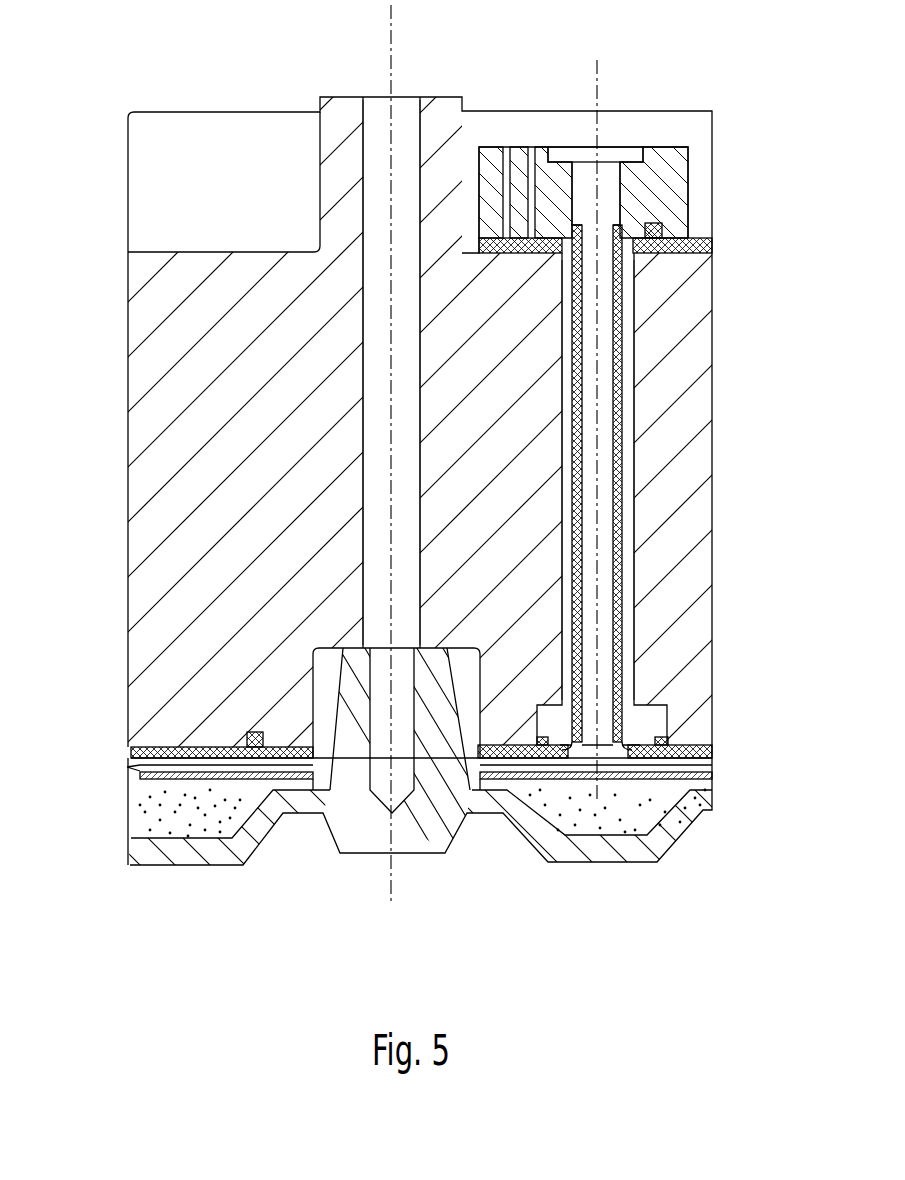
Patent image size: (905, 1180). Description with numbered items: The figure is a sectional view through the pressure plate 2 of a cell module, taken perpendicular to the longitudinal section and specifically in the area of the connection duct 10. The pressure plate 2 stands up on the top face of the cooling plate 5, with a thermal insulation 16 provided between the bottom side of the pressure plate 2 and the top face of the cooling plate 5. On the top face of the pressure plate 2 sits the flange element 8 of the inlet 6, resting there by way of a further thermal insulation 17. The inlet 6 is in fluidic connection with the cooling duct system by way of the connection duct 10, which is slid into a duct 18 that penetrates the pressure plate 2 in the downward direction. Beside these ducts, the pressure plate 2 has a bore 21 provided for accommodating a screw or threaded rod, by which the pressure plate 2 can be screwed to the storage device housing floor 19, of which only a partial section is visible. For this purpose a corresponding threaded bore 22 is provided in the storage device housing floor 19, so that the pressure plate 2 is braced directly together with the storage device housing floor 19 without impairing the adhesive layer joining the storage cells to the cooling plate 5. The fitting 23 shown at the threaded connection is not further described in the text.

The pressure plate 2 is at (153, 469).
The cooling plate 5 is at (155, 774).
The inlet 6 is at (608, 178).
The flange element 8 is at (672, 188).
The connection duct 10 is at (622, 466).
The thermal insulation 16 is at (717, 752).
The thermal insulation 17 is at (217, 132).
The duct 18 is at (628, 367).
The storage device housing floor 19 is at (200, 845).
The bore 21 is at (357, 127).
The threaded bore 22 is at (380, 738).
The bushing cup 23 is at (428, 642).